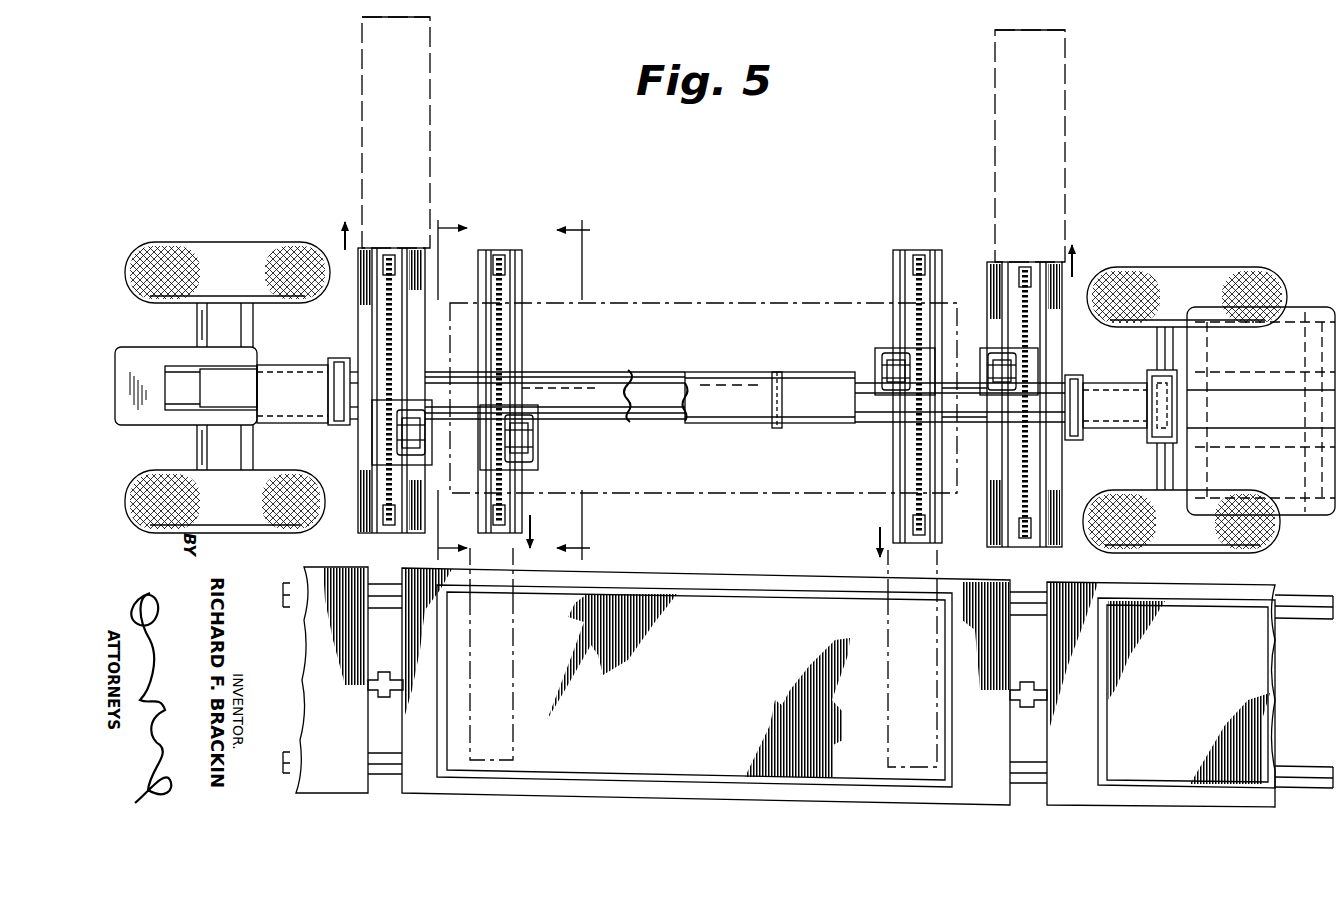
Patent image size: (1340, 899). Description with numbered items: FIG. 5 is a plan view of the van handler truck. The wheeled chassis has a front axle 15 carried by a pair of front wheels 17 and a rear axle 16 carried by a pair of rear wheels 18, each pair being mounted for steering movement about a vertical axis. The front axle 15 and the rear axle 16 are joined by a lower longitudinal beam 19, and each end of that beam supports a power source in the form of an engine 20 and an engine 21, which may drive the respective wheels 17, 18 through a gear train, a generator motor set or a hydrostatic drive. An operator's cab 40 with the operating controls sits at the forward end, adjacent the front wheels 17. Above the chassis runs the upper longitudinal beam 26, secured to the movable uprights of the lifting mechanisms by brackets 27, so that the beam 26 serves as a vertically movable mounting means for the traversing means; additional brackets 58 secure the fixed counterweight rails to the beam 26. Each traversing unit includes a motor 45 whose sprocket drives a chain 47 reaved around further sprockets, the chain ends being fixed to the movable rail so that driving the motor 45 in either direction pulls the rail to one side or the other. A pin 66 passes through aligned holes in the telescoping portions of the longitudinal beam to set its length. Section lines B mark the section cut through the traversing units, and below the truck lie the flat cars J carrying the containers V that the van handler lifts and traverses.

The front axle 15 is at (1158, 470).
The rear axle 16 is at (253, 452).
The front wheels 17 is at (1210, 267).
The rear wheels 18 is at (165, 245).
The lower longitudinal beam 19 is at (660, 380).
The engine 20 is at (1180, 373).
The engine 21 is at (155, 350).
The upper longitudinal beam 26 is at (590, 372).
The brackets 27 is at (337, 358).
The operator's cab 40 is at (1290, 332).
The motor 45 is at (533, 435).
The chain 47 is at (390, 258).
The brackets 58 is at (405, 258).
The pin 66 is at (780, 372).
The section line B is at (527, 393).
The flat cars J is at (365, 567).
The containers V is at (730, 303).